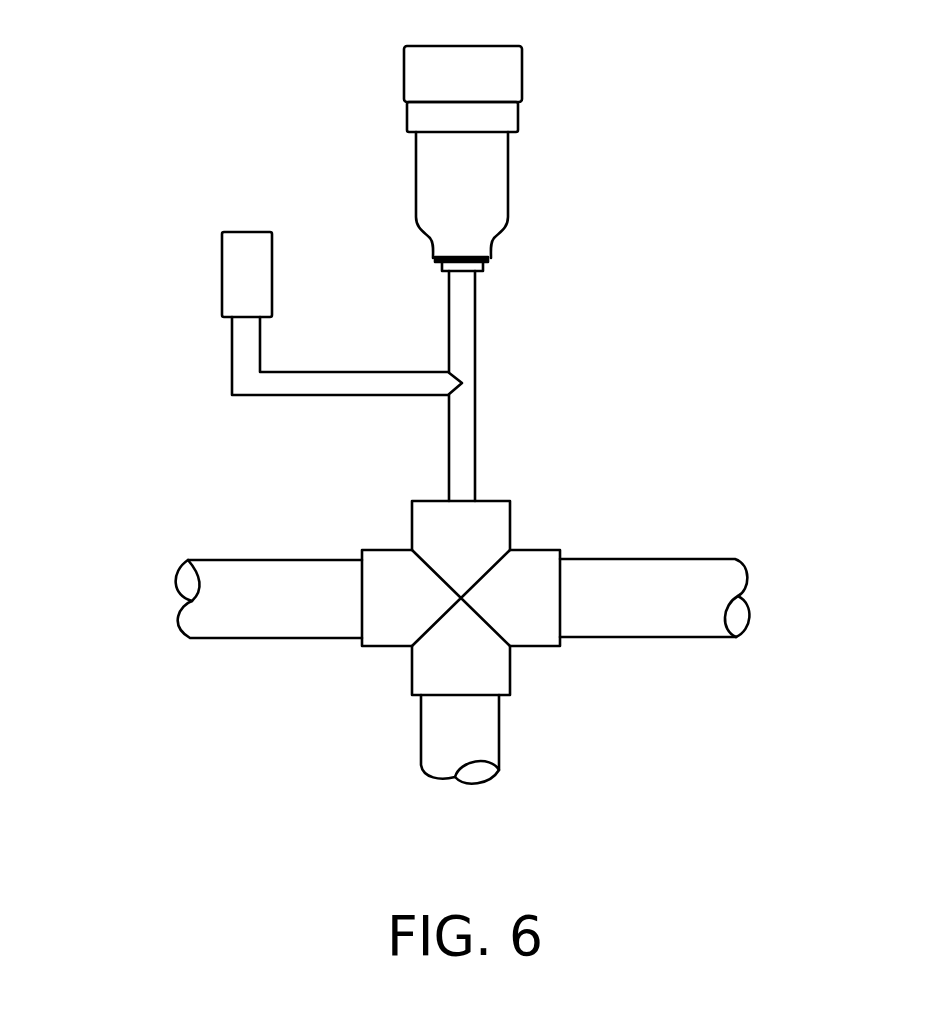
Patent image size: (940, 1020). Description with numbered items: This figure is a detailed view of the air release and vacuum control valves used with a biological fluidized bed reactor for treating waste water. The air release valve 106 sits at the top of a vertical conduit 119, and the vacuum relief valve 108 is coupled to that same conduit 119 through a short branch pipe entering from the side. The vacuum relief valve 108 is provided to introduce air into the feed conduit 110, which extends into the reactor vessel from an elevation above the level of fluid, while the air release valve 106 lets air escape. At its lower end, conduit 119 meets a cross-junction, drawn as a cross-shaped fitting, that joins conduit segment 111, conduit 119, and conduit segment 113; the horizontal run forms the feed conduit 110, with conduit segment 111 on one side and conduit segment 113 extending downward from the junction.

The air release valve 106 is at (510, 163).
The vacuum relief valve 108 is at (222, 285).
The feed conduit 110 is at (730, 580).
The conduit segment 111 is at (665, 637).
The conduit segment 113 is at (483, 744).
The conduit 119 is at (476, 410).